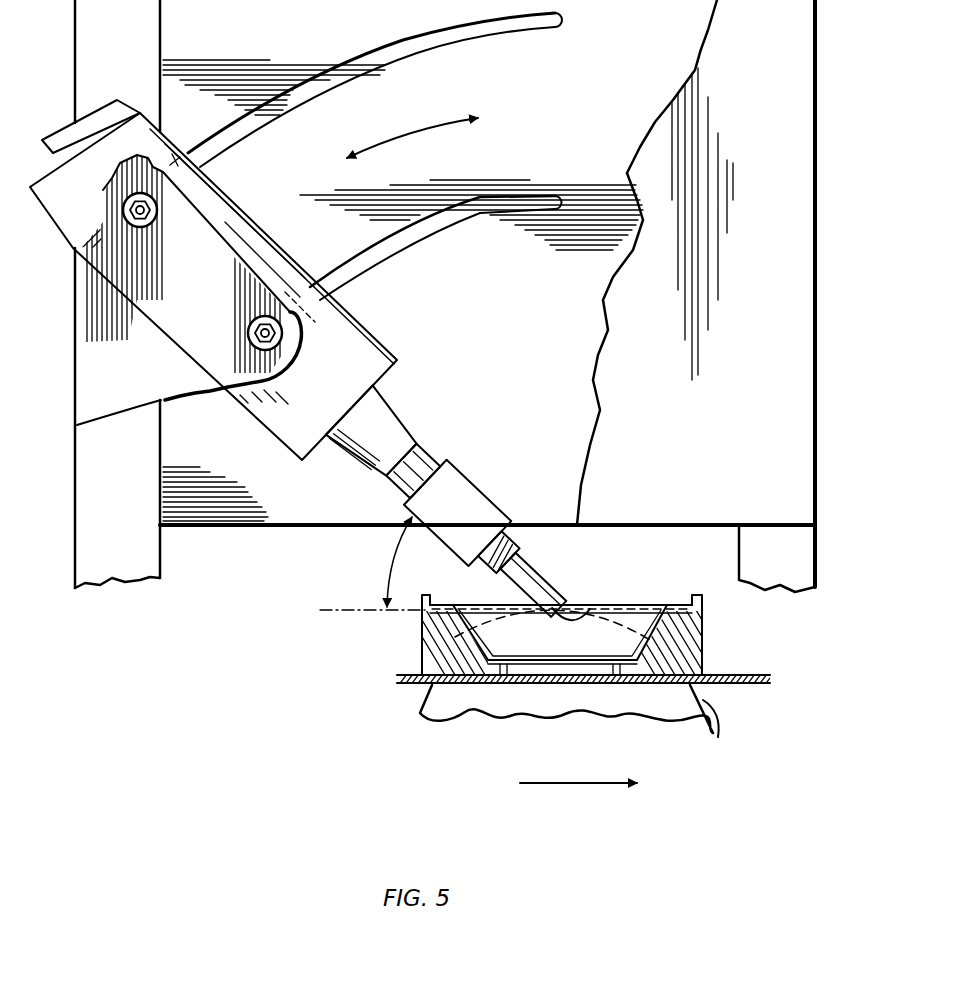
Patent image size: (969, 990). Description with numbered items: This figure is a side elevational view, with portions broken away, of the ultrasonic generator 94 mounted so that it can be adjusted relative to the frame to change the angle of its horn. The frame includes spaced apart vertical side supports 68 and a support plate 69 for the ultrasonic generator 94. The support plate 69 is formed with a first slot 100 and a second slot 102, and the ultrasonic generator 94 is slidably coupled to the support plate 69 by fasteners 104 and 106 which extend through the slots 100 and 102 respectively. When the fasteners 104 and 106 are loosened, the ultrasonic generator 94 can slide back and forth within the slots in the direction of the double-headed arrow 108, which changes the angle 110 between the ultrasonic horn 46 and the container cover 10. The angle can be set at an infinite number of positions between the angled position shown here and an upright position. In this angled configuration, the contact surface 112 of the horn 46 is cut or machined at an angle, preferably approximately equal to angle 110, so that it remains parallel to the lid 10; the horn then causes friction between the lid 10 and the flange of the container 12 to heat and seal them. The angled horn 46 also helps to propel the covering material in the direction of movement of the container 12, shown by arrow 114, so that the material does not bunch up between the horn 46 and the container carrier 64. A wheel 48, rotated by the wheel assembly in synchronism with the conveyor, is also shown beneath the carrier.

The container cover 10 is at (653, 603).
The container 12 is at (562, 655).
The ultrasonic horn 46 is at (538, 573).
The wheel 48 is at (690, 704).
The container carrier 64 is at (432, 647).
The vertical side supports 68 is at (140, 545).
The support plate 69 is at (785, 97).
The ultrasonic generator 94 is at (290, 428).
The first slot 100 is at (527, 28).
The second slot 102 is at (552, 200).
The fastener 104 is at (158, 226).
The fastener 106 is at (302, 357).
The double-headed arrow 108 is at (413, 128).
The angle 110 is at (392, 568).
The contact surface 112 is at (595, 608).
The arrow 114 is at (568, 786).